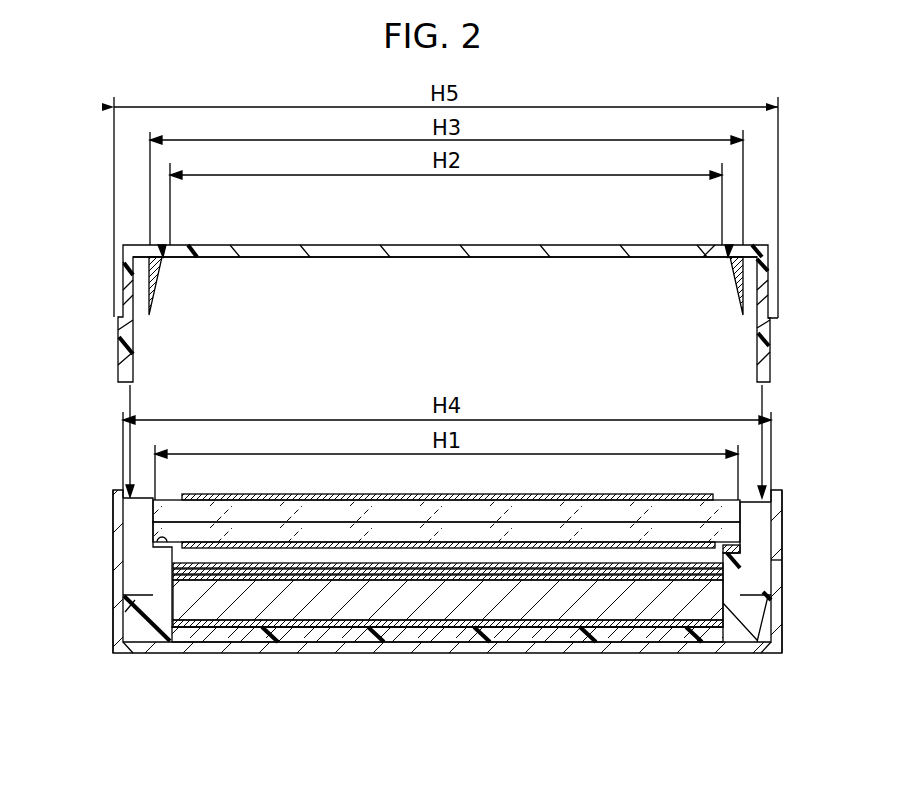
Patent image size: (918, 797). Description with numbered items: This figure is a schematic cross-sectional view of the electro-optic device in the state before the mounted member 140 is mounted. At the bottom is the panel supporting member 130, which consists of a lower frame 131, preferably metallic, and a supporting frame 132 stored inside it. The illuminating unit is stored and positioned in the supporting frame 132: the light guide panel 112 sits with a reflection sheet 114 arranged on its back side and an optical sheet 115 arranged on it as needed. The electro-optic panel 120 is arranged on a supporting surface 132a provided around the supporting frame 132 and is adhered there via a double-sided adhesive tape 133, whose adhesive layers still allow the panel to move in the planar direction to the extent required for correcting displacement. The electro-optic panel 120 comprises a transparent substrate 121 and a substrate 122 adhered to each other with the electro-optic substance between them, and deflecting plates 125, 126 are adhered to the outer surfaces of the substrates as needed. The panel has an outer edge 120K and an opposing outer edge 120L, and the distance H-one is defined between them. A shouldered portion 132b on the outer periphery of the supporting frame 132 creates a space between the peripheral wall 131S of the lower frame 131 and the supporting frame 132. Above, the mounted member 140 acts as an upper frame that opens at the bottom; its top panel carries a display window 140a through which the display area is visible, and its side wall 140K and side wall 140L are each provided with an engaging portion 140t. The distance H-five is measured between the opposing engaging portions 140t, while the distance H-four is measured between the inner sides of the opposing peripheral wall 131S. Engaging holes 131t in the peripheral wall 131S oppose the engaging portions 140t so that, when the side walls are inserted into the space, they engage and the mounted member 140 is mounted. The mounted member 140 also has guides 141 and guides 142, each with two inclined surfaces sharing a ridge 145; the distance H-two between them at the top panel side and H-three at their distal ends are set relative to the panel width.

The mounted member 140 is at (104, 224).
The display window 140a is at (379, 246).
The side wall 140L is at (122, 276).
The side wall 140K is at (762, 285).
The engaging portion 140t is at (118, 333).
The guide 141 is at (734, 256).
The guide 142 is at (162, 256).
The ridge 145 is at (160, 290).
The electro-optic panel 120 is at (446, 449).
The outer edge 120L is at (156, 500).
The outer edge 120K is at (740, 502).
The substrate 121 is at (236, 512).
The substrate 122 is at (341, 527).
The deflecting plate 125 is at (650, 540).
The deflecting plate 126 is at (558, 496).
The double-sided adhesive tape 133 is at (729, 512).
The panel supporting member 130 is at (449, 610).
The lower frame 131 is at (255, 652).
The peripheral wall 131S is at (113, 600).
The engaging hole 131t is at (776, 568).
The supporting frame 132 is at (319, 635).
The supporting surface 132a is at (160, 538).
The shouldered portion 132b is at (150, 642).
The light guide panel 112 is at (458, 600).
The reflection sheet 114 is at (590, 628).
The optical sheet 115 is at (665, 578).